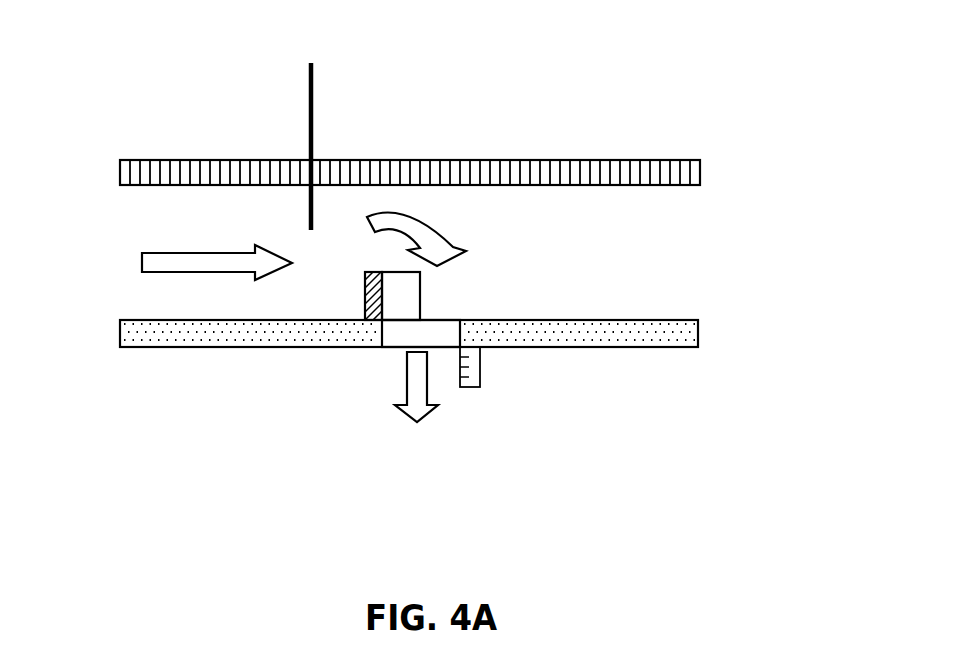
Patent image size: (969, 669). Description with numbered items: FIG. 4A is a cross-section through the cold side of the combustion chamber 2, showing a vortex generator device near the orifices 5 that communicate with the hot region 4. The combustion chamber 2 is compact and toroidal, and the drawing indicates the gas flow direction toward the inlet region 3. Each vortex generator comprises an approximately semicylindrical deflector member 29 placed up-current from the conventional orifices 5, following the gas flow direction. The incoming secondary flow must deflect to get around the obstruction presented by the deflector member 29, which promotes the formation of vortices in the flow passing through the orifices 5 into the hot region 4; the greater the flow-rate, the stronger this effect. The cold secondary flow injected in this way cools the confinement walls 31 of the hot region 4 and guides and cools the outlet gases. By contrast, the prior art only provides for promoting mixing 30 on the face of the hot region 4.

The combustion chamber 2 is at (618, 182).
The inlet region 3 is at (314, 125).
The deflector member 29 is at (383, 280).
The confinement walls 31 is at (615, 338).
The orifices 5 is at (408, 337).
The mixing 30 is at (477, 369).
The hot region 4 is at (548, 440).